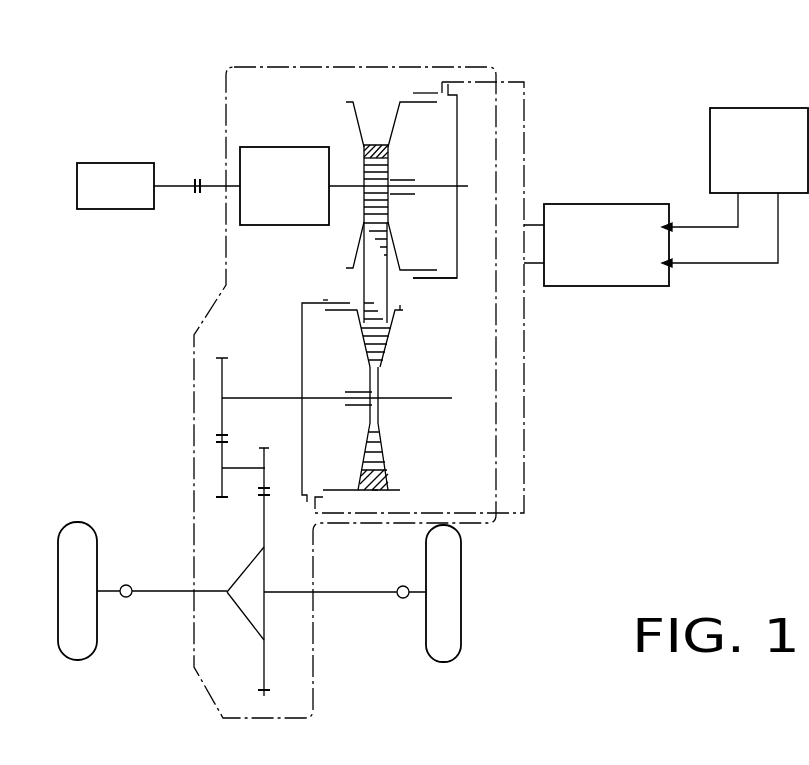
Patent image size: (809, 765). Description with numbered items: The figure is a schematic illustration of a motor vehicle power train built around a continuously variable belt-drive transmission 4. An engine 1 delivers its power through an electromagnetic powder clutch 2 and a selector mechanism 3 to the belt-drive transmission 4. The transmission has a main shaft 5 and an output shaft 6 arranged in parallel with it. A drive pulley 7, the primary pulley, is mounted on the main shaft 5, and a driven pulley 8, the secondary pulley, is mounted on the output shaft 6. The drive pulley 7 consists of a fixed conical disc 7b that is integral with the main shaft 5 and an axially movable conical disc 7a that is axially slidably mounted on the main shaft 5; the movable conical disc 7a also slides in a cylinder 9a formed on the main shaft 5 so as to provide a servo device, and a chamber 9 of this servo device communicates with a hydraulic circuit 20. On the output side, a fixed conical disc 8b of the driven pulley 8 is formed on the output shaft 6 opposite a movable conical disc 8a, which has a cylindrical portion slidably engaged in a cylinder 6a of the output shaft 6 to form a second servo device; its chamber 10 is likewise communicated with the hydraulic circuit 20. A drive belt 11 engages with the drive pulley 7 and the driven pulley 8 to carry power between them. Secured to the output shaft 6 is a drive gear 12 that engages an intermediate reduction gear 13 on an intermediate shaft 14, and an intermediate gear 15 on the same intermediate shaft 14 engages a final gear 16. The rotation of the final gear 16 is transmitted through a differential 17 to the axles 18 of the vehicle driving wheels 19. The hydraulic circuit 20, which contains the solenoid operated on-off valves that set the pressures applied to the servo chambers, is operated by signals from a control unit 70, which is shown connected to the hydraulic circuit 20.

The engine 1 is at (123, 163).
The electromagnetic powder clutch 2 is at (198, 178).
The selector mechanism 3 is at (289, 147).
The continuously variable belt-drive transmission 4 is at (385, 98).
The main shaft 5 is at (341, 188).
The output shaft 6 is at (265, 398).
The cylinder of the output shaft 6a is at (325, 302).
The drive pulley 7 is at (376, 143).
The movable conical disc 7a is at (408, 102).
The fixed conical disc 7b is at (353, 115).
The driven pulley 8 is at (380, 397).
The movable conical disc 8a is at (358, 316).
The fixed conical disc 8b is at (385, 345).
The chamber of the servo device 9 is at (447, 204).
The cylinder 9a is at (431, 279).
The chamber of the servo device 10 is at (302, 333).
The drive belt 11 is at (375, 490).
The drive gear 12 is at (223, 356).
The intermediate reduction gear 13 is at (220, 500).
The intermediate shaft 14 is at (245, 468).
The intermediate gear 15 is at (264, 447).
The final gear 16 is at (265, 696).
The differential 17 is at (251, 576).
The axles 18 is at (115, 594).
The vehicle driving wheels 19 is at (91, 551).
The hydraulic circuit 20 is at (600, 287).
The control unit 70 is at (745, 108).